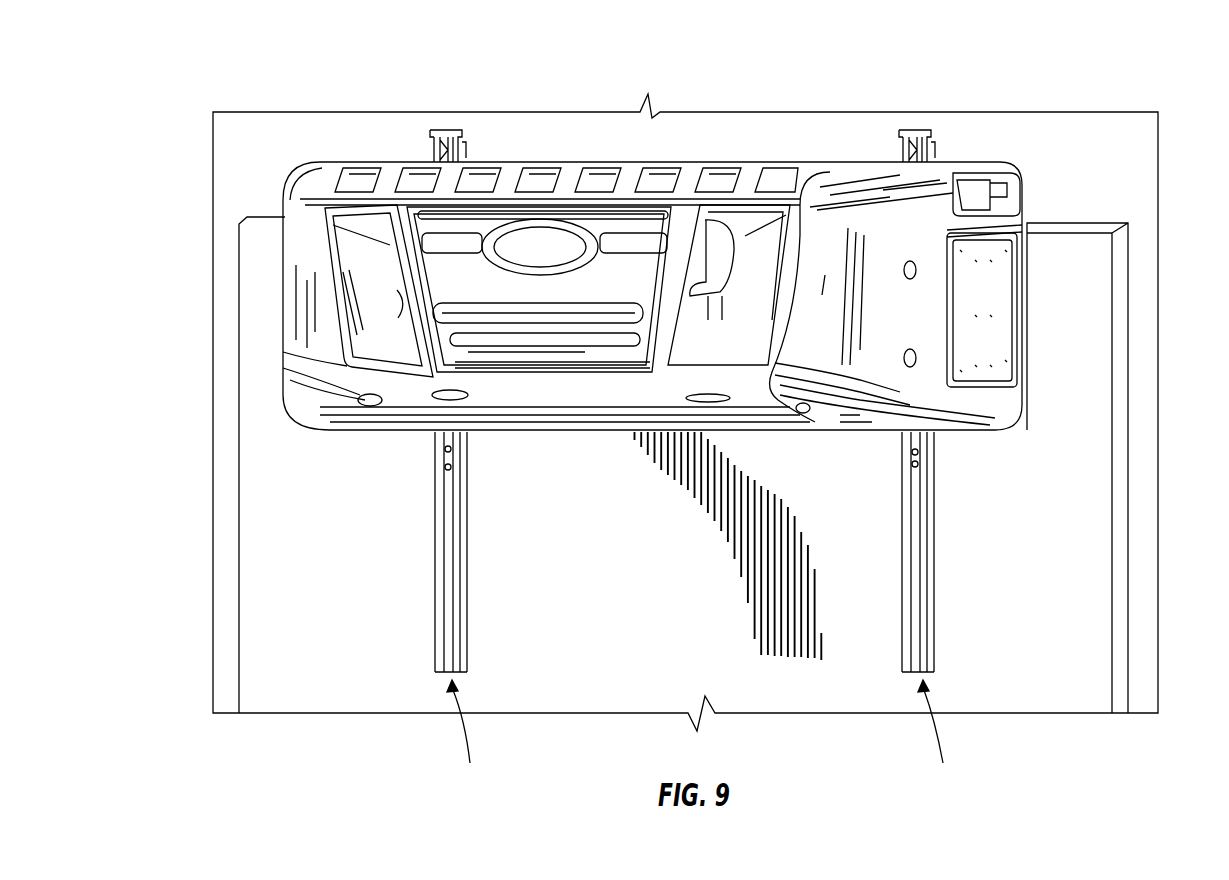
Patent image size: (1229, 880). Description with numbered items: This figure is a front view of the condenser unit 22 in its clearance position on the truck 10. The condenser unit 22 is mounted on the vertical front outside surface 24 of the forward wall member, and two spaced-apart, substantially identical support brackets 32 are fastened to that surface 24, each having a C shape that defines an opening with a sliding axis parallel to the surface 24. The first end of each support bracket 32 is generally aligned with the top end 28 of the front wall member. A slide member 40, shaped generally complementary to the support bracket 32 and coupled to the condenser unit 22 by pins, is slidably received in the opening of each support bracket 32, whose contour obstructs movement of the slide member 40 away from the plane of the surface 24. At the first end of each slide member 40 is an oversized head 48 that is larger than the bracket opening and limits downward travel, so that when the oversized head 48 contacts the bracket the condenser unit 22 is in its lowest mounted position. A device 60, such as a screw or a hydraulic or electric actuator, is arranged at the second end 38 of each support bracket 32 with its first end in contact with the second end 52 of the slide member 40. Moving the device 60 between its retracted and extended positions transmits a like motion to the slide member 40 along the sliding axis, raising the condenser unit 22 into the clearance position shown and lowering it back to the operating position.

The truck 10 is at (205, 78).
The condenser unit 22 is at (345, 128).
The vertical front outside surface 24 is at (278, 548).
The top end 28 is at (1085, 223).
The support bracket 32 is at (466, 632).
The second end 38 is at (443, 674).
The slide member 40 is at (470, 148).
The oversized head 48 is at (447, 128).
The second end 52 is at (438, 472).
The device 60 is at (698, 733).